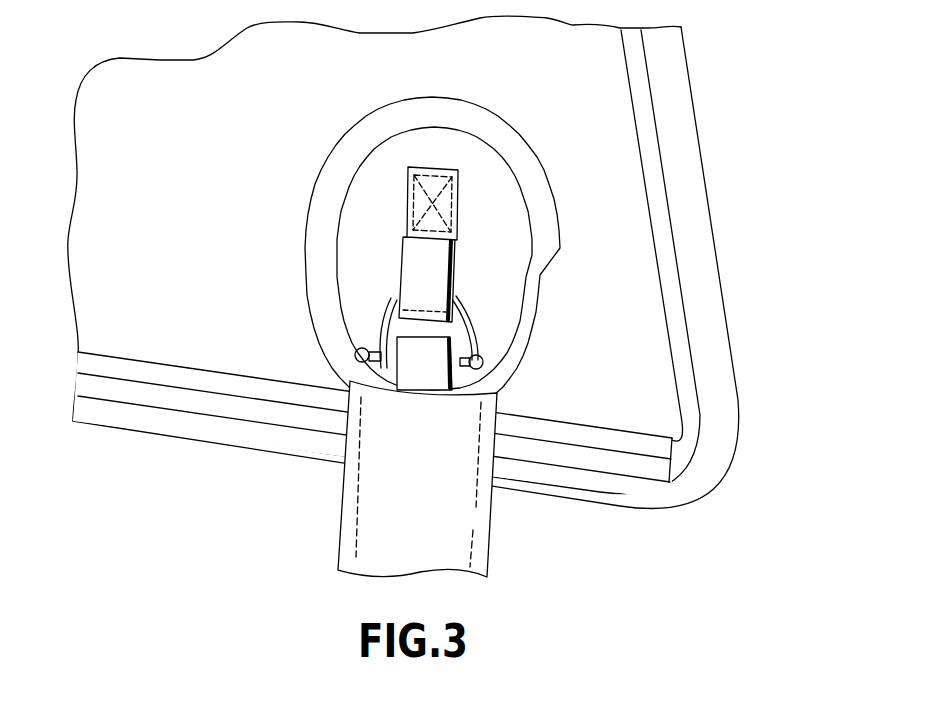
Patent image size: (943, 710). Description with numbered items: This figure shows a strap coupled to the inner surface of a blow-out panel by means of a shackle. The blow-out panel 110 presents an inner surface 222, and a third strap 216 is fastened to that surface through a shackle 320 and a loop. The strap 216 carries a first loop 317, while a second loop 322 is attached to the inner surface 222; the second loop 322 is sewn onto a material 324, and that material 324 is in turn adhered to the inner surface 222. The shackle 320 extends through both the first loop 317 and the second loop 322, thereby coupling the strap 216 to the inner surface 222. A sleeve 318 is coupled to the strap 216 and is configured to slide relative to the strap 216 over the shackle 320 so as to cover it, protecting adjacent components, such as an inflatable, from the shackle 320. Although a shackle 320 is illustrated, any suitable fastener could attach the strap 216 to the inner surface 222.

The blow-out panel 110 is at (702, 213).
The inner surface 222 is at (222, 136).
The third strap 216 is at (410, 377).
The first loop 317 is at (484, 358).
The sleeve 318 is at (453, 535).
The shackle 320 is at (478, 308).
The second loop 322 is at (437, 285).
The material 324 is at (488, 192).